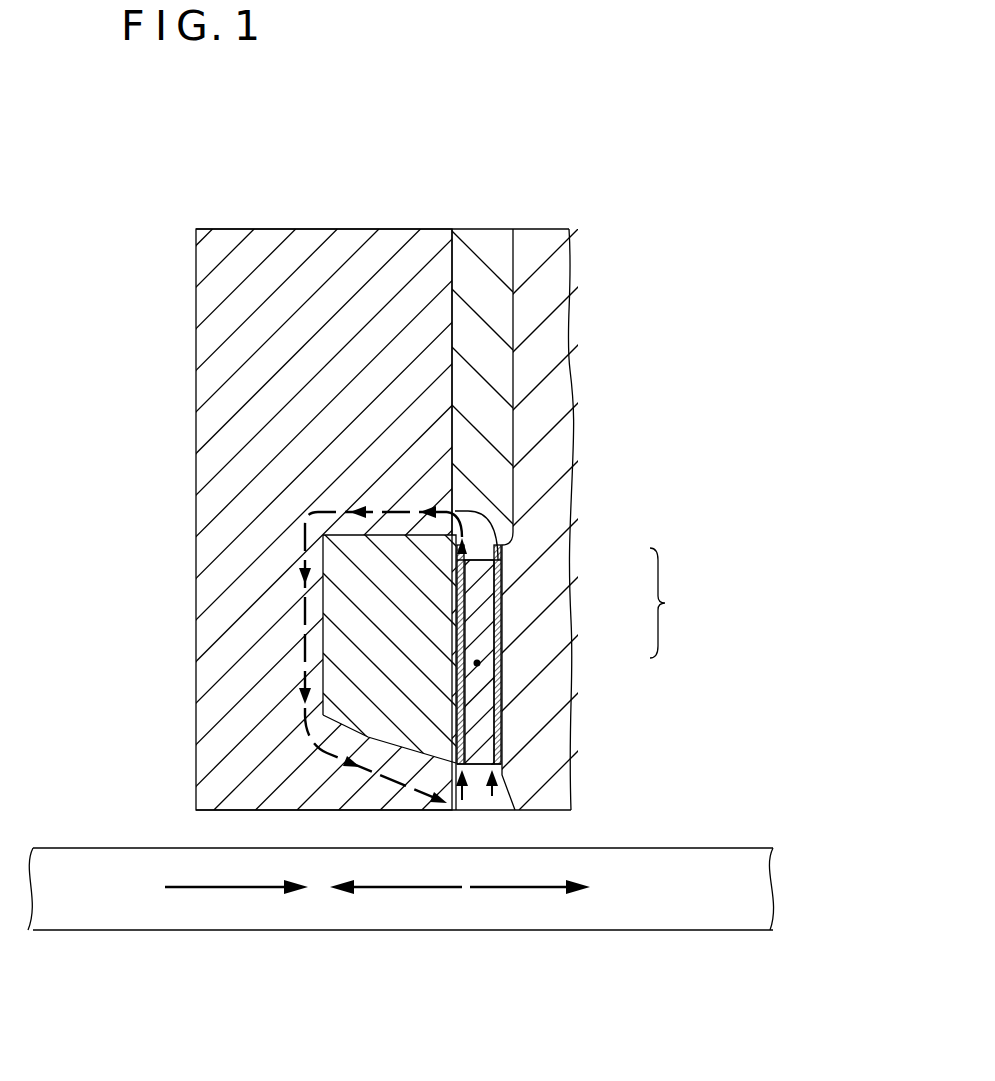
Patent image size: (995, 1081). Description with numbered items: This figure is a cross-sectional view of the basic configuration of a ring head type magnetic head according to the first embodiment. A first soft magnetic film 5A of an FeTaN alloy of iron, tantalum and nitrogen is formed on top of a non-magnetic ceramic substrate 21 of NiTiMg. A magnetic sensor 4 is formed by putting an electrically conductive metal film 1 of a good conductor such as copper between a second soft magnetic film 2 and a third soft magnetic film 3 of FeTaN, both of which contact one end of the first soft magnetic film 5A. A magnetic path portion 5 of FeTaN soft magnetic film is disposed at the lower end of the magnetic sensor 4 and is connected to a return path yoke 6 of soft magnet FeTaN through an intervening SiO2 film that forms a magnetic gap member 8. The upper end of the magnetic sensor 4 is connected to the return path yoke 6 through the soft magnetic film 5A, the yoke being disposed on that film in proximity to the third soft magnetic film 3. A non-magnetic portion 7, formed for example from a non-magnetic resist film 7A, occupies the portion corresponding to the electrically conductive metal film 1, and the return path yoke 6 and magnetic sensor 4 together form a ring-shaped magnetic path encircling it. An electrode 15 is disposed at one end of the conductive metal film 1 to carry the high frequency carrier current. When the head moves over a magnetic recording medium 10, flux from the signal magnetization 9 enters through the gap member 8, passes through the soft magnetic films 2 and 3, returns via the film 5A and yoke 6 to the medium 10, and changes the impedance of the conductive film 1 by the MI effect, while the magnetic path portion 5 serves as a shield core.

The electrically conductive metal film 1 is at (470, 576).
The second soft magnetic film 2 is at (496, 604).
The third soft magnetic film 3 is at (498, 636).
The magnetic sensor 4 is at (574, 656).
The magnetic path portion 5 is at (480, 797).
The first soft magnetic film 5A is at (482, 243).
The return path yoke 6 is at (232, 245).
The non-magnetic portion 7 is at (327, 646).
The non-magnetic resist film 7A is at (368, 686).
The magnetic gap member 8 is at (455, 816).
The signal magnetization 9 is at (233, 889).
The magnetic recording medium 10 is at (627, 913).
The electrode 15 is at (477, 663).
The non-magnetic ceramic substrate 21 is at (553, 316).